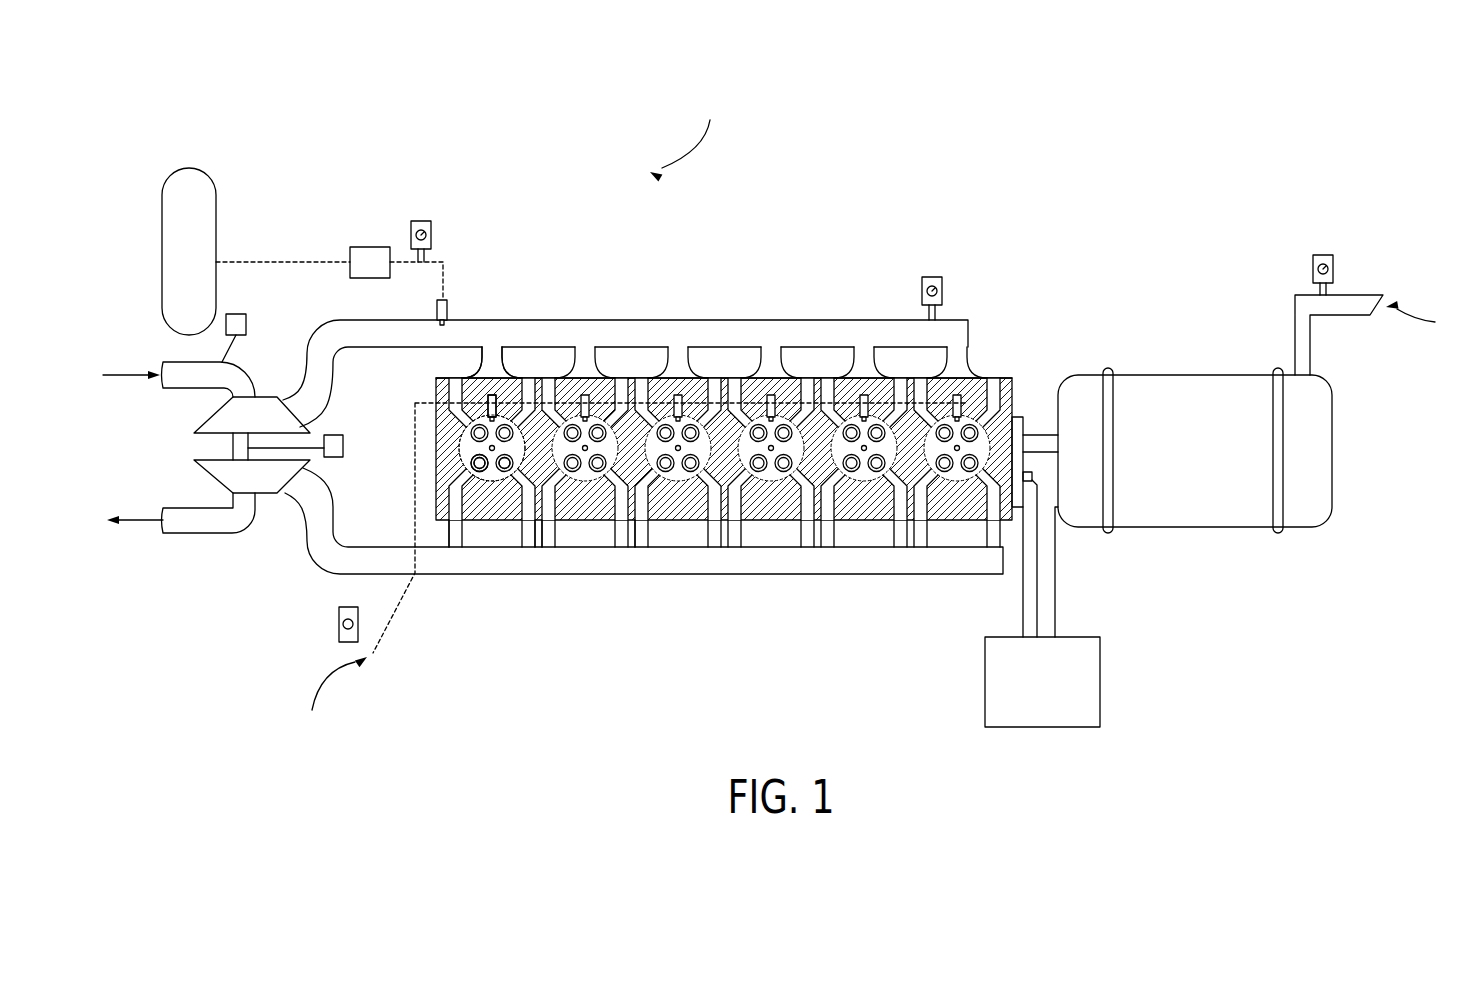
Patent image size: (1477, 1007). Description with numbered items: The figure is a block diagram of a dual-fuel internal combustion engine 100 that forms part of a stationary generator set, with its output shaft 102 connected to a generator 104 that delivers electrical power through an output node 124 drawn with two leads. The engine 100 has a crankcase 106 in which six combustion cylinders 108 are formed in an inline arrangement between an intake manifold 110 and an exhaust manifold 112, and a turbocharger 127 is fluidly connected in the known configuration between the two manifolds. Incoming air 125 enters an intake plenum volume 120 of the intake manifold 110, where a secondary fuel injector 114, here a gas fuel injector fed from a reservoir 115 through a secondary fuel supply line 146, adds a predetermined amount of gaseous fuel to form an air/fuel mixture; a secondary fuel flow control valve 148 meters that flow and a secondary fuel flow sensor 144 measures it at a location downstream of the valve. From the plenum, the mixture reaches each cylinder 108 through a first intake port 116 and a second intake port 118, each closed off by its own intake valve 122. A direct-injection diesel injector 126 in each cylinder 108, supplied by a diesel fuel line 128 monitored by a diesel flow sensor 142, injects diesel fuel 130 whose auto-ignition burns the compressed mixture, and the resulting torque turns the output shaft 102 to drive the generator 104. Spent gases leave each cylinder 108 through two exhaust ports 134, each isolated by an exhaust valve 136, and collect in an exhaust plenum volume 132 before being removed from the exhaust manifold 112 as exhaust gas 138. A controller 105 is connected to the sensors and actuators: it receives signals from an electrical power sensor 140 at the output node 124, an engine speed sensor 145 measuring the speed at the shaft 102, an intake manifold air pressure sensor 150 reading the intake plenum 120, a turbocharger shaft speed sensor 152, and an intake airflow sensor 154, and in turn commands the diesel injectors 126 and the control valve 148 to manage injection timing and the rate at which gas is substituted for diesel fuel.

The internal combustion engine 100 is at (685, 133).
The output shaft 102 is at (1035, 440).
The generator 104 is at (1172, 465).
The controller 105 is at (1028, 697).
The crankcase 106 is at (443, 508).
The combustion cylinder 108 is at (957, 420).
The intake manifold 110 is at (432, 325).
The exhaust manifold 112 is at (540, 550).
The secondary fuel injector 114 is at (447, 298).
The reservoir 115 is at (174, 267).
The first intake port 116 is at (440, 392).
The second intake port 118 is at (530, 385).
The intake plenum volume 120 is at (492, 345).
The intake valve 122 is at (468, 458).
The output node 124 is at (1382, 335).
The incoming air 125 is at (118, 370).
The direct-injection diesel injector 126 is at (493, 395).
The turbocharger 127 is at (180, 450).
The diesel fuel line 128 is at (378, 632).
The diesel fuel 130 is at (333, 699).
The exhaust plenum volume 132 is at (735, 573).
The exhaust port 134 is at (633, 522).
The exhaust valve 136 is at (505, 468).
The exhaust gas 138 is at (145, 523).
The electrical power sensor 140 is at (1313, 268).
The diesel flow sensor 142 is at (339, 625).
The secondary fuel flow sensor 144 is at (413, 220).
The engine speed sensor 145 is at (1035, 482).
The secondary fuel supply line 146 is at (263, 260).
The secondary fuel flow control valve 148 is at (368, 247).
The intake manifold air pressure sensor 150 is at (934, 276).
The turbocharger shaft speed sensor 152 is at (340, 434).
The intake airflow sensor 154 is at (247, 323).